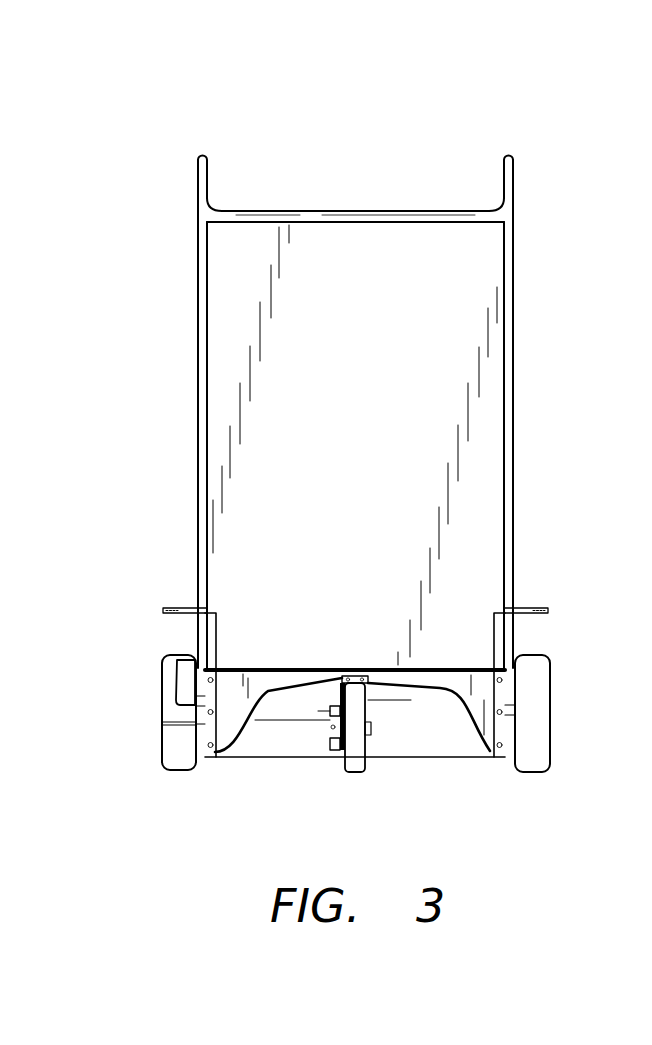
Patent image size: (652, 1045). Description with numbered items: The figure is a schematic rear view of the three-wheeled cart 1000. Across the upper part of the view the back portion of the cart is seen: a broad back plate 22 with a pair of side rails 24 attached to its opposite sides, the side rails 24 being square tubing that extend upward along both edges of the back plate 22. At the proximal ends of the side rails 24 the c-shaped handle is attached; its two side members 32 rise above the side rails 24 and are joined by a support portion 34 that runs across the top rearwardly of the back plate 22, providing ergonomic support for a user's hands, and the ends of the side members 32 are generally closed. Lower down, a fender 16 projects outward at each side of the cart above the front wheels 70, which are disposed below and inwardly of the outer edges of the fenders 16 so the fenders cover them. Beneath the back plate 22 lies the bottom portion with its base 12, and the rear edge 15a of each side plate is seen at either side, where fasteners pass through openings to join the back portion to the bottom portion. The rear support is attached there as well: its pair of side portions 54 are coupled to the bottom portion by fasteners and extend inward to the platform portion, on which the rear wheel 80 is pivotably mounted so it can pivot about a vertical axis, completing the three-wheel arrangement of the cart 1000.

The three-wheeled cart 1000 is at (492, 95).
The base 12 is at (418, 741).
The rear edge 15a is at (211, 645).
The fender 16 is at (178, 607).
The back plate 22 is at (378, 388).
The side rail 24 is at (197, 388).
The side member 32 is at (200, 183).
The support portion 34 is at (380, 214).
The side portion 54 is at (265, 680).
The front wheel 70 is at (152, 702).
The rear wheel 80 is at (360, 788).